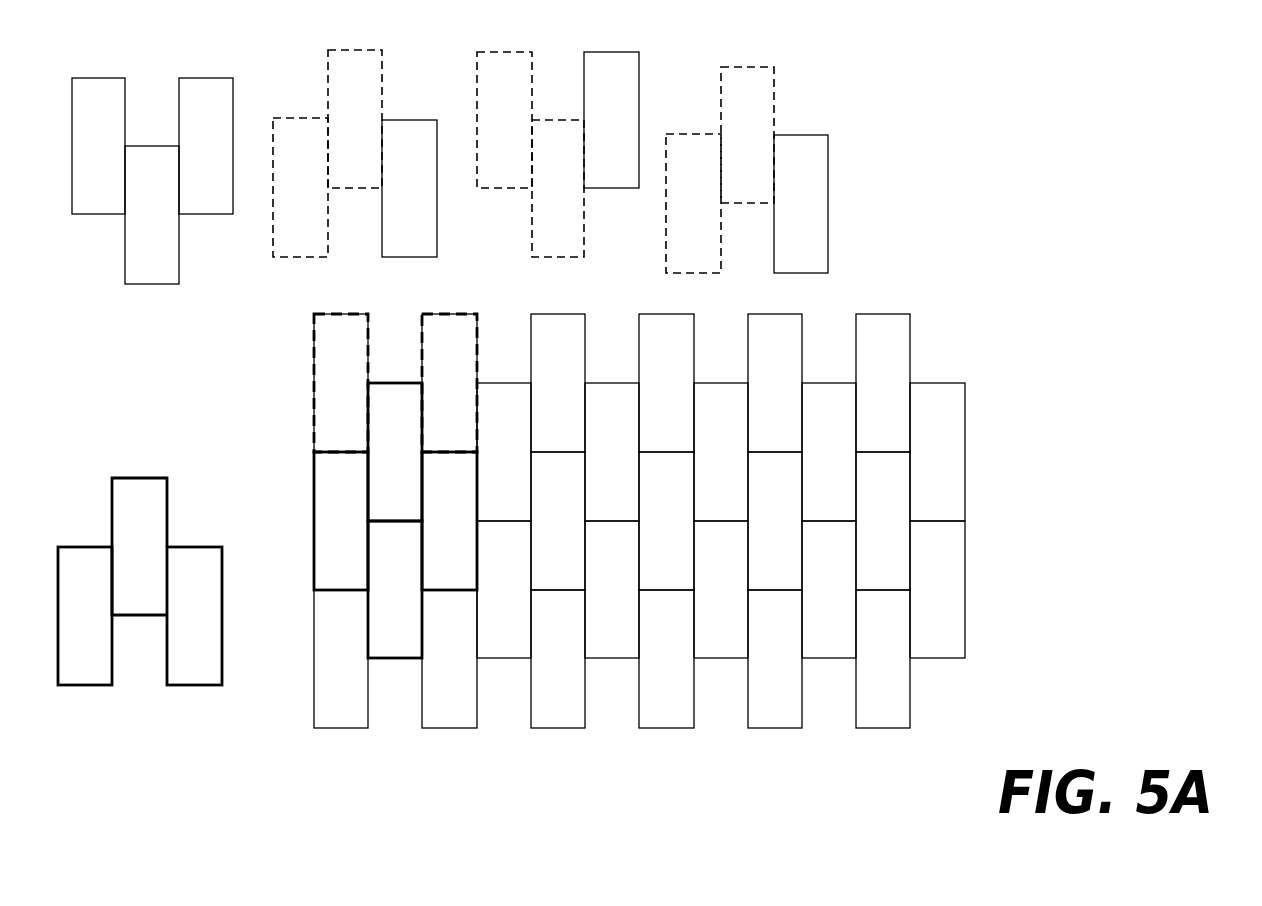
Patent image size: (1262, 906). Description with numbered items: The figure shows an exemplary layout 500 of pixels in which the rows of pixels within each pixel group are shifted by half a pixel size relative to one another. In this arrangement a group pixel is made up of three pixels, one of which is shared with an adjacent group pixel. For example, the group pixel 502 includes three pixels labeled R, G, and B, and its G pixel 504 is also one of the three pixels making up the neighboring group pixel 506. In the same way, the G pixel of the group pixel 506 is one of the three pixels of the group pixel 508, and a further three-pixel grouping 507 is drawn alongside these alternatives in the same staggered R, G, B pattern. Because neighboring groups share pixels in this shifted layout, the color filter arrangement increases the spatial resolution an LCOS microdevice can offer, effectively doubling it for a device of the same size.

The layout 500 is at (726, 471).
The group pixel 502 is at (302, 507).
The G pixel 504 is at (145, 290).
The group pixel 506 is at (302, 355).
The sub-pixel arrangement alternative 507 is at (417, 330).
The group pixel 508 is at (492, 340).